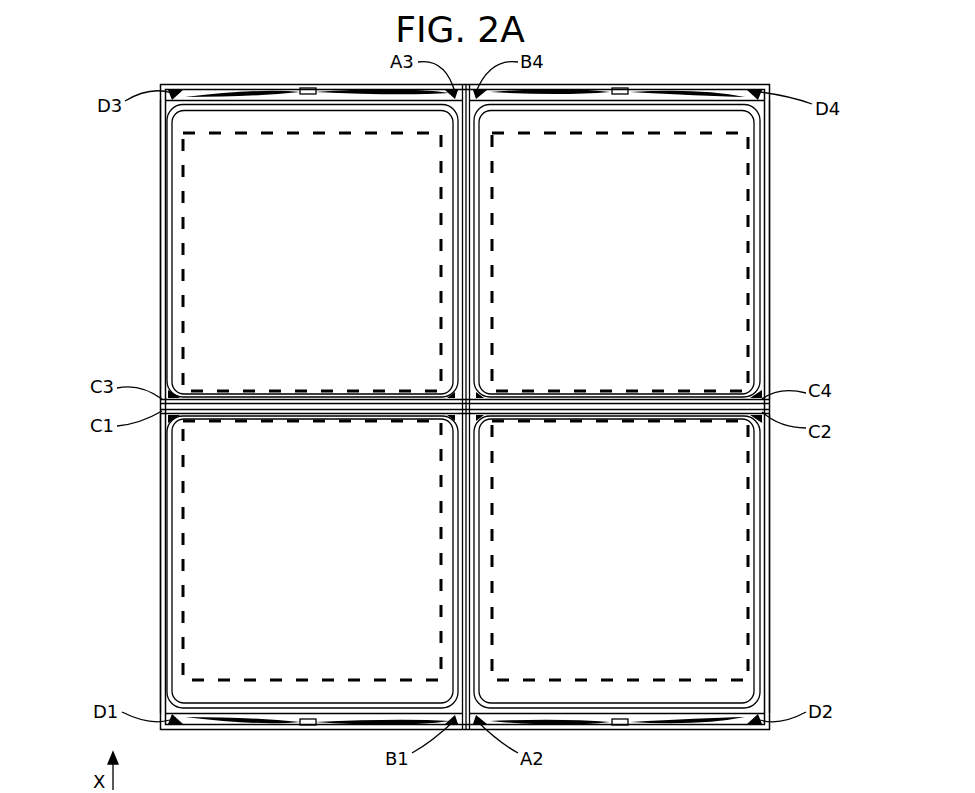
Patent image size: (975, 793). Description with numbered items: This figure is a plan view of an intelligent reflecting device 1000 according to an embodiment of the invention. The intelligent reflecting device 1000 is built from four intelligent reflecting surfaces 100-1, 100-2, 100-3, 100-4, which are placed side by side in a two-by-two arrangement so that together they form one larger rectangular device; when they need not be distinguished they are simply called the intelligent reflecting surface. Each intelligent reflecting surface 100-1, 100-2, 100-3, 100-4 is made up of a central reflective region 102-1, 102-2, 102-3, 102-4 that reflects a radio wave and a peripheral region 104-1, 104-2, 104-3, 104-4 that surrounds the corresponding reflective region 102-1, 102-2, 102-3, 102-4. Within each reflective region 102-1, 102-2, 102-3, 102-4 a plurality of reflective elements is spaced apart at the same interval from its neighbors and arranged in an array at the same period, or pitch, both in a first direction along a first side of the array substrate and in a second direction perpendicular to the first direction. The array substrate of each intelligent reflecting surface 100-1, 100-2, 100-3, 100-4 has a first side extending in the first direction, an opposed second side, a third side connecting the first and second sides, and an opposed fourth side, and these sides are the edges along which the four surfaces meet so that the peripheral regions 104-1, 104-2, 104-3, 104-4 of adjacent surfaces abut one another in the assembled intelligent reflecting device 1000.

The intelligent reflecting device 1000 is at (160, 72).
The intelligent reflecting surface 100-1 is at (297, 566).
The intelligent reflecting surface 100-2 is at (603, 566).
The intelligent reflecting surface 100-3 is at (297, 238).
The intelligent reflecting surface 100-4 is at (603, 238).
The reflective region 102-1 is at (178, 594).
The reflective region 102-2 is at (754, 594).
The reflective region 102-3 is at (178, 266).
The reflective region 102-4 is at (754, 267).
The peripheral region 104-1 is at (158, 546).
The peripheral region 104-2 is at (772, 546).
The peripheral region 104-3 is at (158, 214).
The peripheral region 104-4 is at (772, 214).